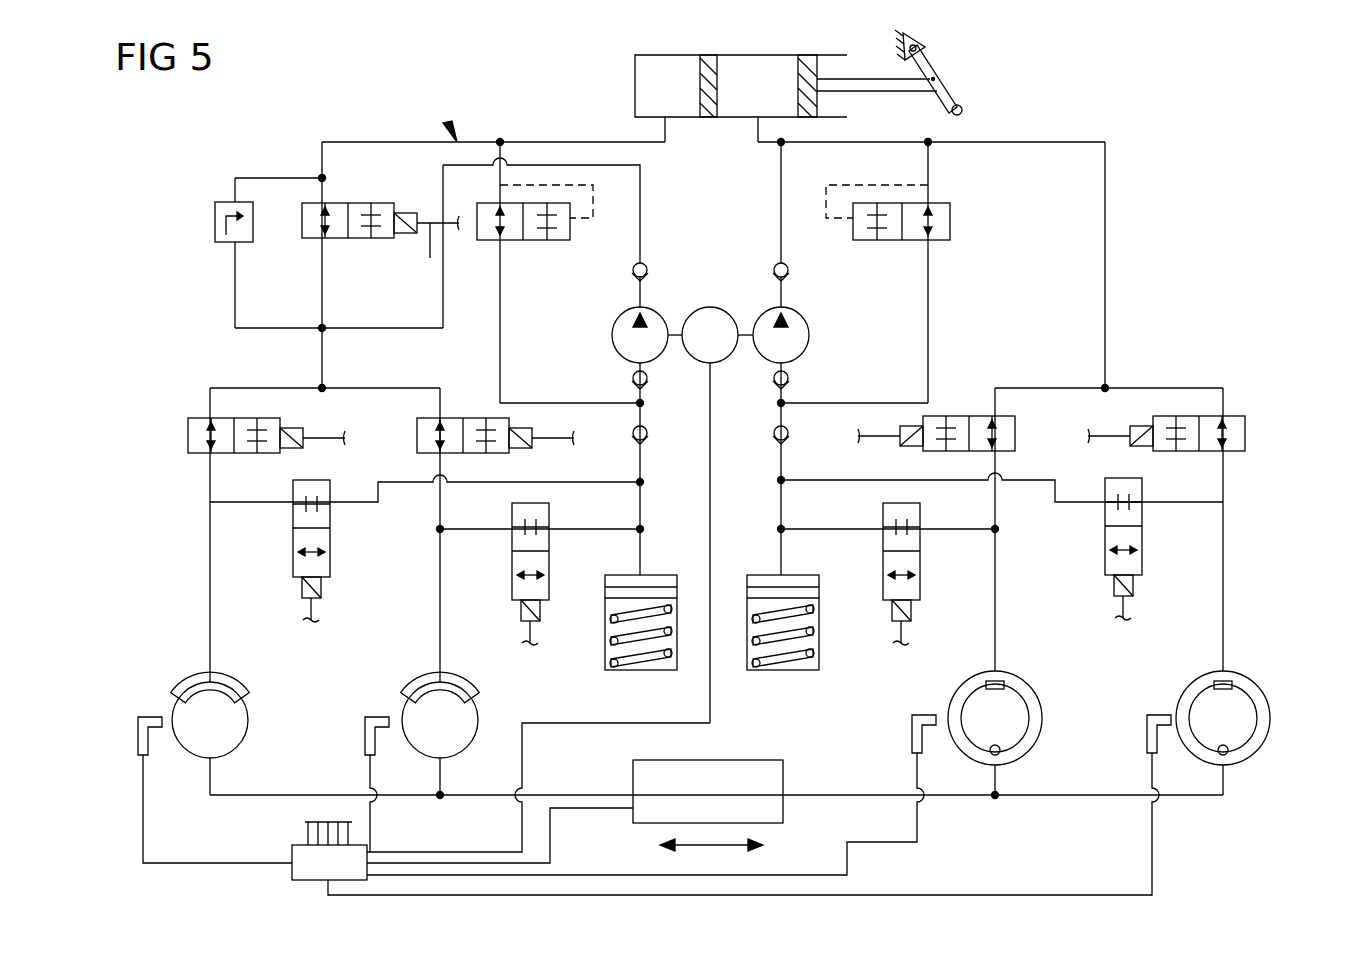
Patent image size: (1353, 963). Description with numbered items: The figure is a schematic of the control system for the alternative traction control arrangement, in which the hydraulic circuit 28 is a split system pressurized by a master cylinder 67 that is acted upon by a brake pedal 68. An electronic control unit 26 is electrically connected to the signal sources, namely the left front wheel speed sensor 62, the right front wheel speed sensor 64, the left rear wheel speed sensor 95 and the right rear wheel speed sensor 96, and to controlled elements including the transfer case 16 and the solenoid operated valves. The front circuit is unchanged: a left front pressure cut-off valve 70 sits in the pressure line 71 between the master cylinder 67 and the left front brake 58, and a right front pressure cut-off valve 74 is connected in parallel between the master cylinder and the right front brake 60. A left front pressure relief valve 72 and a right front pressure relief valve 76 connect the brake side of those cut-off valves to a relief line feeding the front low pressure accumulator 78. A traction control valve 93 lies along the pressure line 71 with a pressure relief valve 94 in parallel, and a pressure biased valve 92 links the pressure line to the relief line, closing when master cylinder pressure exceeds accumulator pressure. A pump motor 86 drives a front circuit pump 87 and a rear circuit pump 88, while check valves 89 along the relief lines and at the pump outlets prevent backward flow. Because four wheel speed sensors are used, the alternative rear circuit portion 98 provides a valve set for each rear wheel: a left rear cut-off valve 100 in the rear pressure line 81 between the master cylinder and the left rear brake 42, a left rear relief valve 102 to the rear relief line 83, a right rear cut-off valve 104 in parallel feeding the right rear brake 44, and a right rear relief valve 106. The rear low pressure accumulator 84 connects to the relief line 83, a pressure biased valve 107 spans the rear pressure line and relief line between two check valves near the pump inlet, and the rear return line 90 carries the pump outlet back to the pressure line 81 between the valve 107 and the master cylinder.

The transfer case 16 is at (750, 760).
The electronic control unit 26 is at (292, 858).
The hydraulic circuit 28 is at (452, 125).
The left rear brake 42 is at (1030, 690).
The right rear brake 44 is at (1258, 690).
The left front brake 58 is at (190, 675).
The right front brake 60 is at (420, 675).
The left front wheel speed sensor 62 is at (138, 735).
The right front wheel speed sensor 64 is at (365, 740).
The master cylinder 67 is at (635, 88).
The brake pedal 68 is at (965, 100).
The left front pressure cut-off valve 70 is at (188, 430).
The pressure line 71 is at (322, 155).
The left front pressure relief solenoid operated valve 72 is at (293, 518).
The right front solenoid operated pressure cut-off valve 74 is at (465, 418).
The right front solenoid operated pressure relief valve 76 is at (512, 545).
The front low pressure accumulator 78 is at (660, 575).
The rear pressure line 81 is at (1105, 325).
The rear relief line 83 is at (781, 500).
The rear low pressure accumulator 84 is at (765, 575).
The pump motor 86 is at (710, 307).
The front circuit pump 87 is at (612, 342).
The rear circuit pump 88 is at (810, 330).
The check valves 89 is at (775, 265).
The rear return line 90 is at (781, 195).
The pressure biased valve 92 is at (545, 241).
The solenoid operated traction control valve 93 is at (378, 203).
The pressure relief valve 94 is at (240, 243).
The left rear wheel speed sensor 95 is at (912, 735).
The right rear wheel speed sensor 96 is at (1147, 735).
The alternative rear circuit portion 98 is at (1060, 142).
The left rear solenoid operated pressure cut-off valve 100 is at (1005, 418).
The left rear solenoid operated pressure relief valve 102 is at (920, 572).
The right rear solenoid operated pressure cut-off valve 104 is at (1245, 430).
The right rear solenoid operated pressure relief valve 106 is at (1105, 548).
The pressure biased valve 107 is at (950, 212).